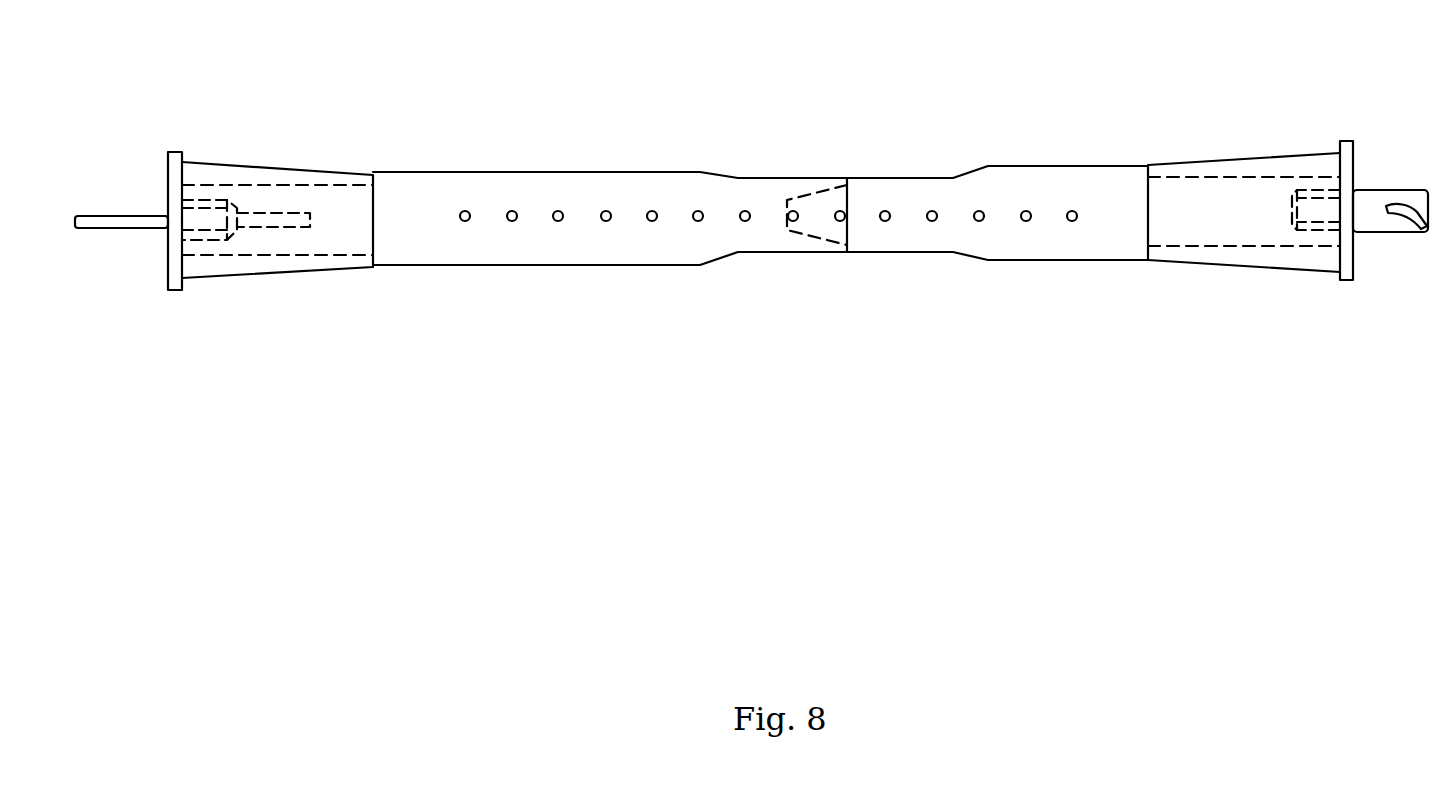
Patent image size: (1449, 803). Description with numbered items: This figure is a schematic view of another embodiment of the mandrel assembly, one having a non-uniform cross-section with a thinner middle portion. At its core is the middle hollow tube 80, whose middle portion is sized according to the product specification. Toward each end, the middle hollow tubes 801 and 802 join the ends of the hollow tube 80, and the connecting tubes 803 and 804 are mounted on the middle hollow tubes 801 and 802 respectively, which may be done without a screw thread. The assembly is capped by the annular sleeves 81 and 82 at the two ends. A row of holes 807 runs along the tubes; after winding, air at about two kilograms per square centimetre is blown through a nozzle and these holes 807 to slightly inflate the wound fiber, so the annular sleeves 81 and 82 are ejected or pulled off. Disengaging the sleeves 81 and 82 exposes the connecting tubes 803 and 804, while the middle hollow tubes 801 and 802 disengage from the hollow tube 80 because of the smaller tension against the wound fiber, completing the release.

The middle hollow tube 80 is at (825, 334).
The annular sleeve 81 is at (224, 161).
The annular sleeve 82 is at (1288, 152).
The middle hollow tube 801 is at (565, 172).
The middle hollow tube 802 is at (1030, 165).
The connecting tube 803 is at (285, 185).
The connecting tube 804 is at (1303, 177).
The holes 807 is at (465, 210).